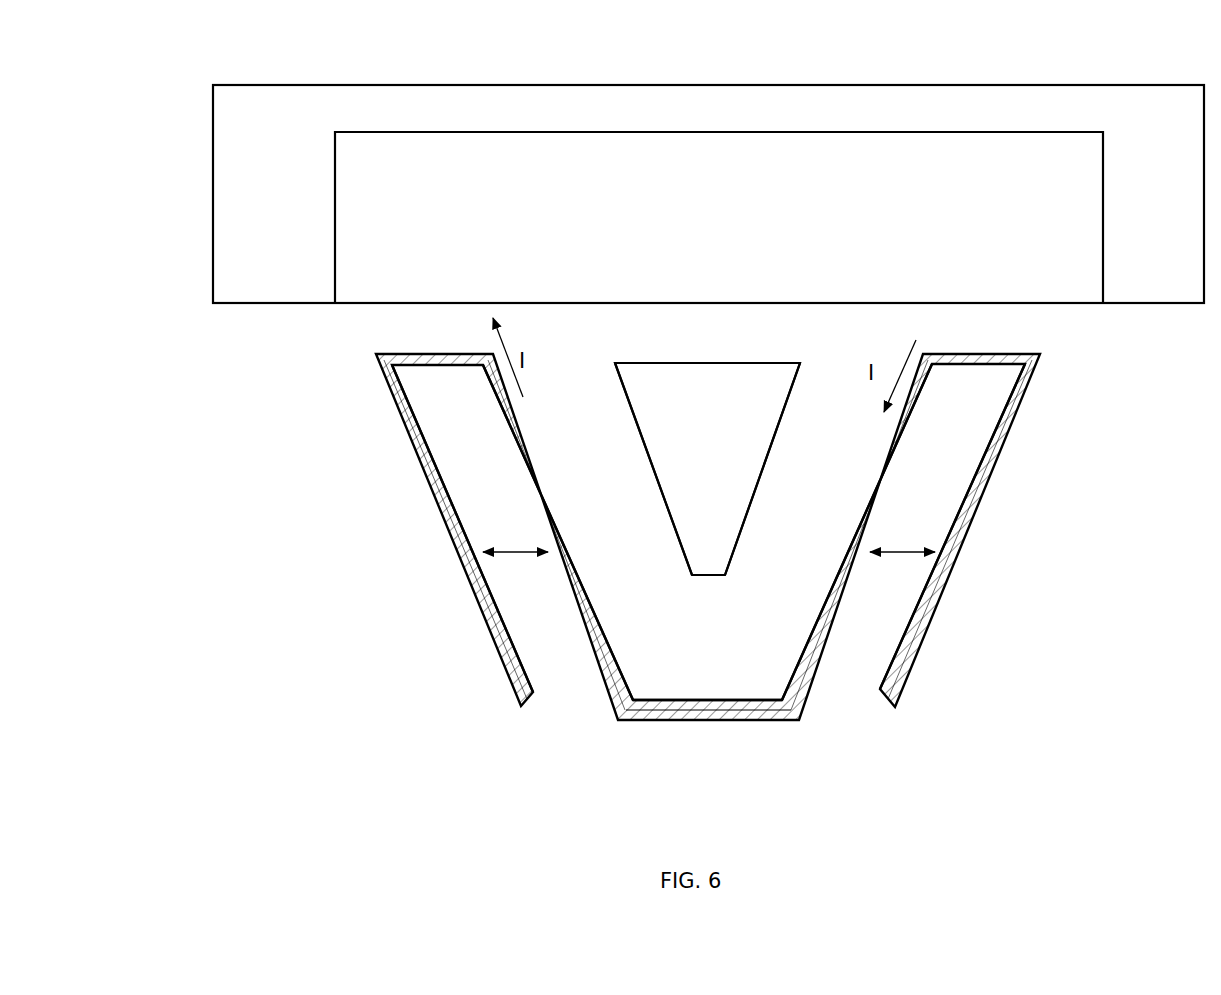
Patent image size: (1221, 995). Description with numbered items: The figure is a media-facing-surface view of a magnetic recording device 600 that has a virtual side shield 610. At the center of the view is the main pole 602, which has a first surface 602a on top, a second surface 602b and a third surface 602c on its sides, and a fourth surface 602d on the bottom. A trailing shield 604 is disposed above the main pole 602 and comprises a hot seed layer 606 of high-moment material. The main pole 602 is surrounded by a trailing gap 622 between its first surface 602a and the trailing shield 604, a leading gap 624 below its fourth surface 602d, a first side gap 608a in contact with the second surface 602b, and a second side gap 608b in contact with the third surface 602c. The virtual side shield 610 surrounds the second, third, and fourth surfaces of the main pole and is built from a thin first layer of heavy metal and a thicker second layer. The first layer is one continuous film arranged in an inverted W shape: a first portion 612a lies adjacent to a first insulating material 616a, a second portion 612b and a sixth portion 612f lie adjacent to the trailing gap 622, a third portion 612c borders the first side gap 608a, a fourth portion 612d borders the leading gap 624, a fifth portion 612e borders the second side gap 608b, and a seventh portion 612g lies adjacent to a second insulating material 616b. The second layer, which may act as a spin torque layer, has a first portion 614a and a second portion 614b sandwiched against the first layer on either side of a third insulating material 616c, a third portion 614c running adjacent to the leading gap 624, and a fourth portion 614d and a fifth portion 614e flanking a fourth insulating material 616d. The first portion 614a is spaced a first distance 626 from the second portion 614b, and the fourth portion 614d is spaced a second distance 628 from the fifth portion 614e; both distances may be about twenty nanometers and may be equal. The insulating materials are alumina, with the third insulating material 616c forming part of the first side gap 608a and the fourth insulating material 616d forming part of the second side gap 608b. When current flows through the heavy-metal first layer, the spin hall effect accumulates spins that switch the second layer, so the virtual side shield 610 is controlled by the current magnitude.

The magnetic recording device 600 is at (206, 60).
The main pole 602 is at (730, 486).
The first surface 602a is at (712, 365).
The second surface 602b is at (646, 455).
The third surface 602c is at (768, 455).
The fourth surface 602d is at (708, 578).
The trailing shield 604 is at (268, 276).
The hot seed layer 606 is at (416, 276).
The first side gap 608a is at (655, 583).
The second side gap 608b is at (820, 583).
The virtual side shield 610 is at (388, 428).
The first portion of the first layer 612a is at (441, 515).
The second portion of the first layer 612b is at (445, 353).
The third portion of the first layer 612c is at (522, 433).
The fourth portion of the first layer 612d is at (672, 699).
The fifth portion of the first layer 612e is at (892, 445).
The sixth portion of the first layer 612f is at (972, 352).
The seventh portion of the first layer 612g is at (992, 473).
The first portion of the second layer 614a is at (418, 399).
The second portion of the second layer 614b is at (525, 466).
The third portion of the second layer 614c is at (712, 722).
The fourth portion of the second layer 614d is at (888, 466).
The fifth portion of the second layer 614e is at (1006, 404).
The first insulating material 616a is at (390, 648).
The second insulating material 616b is at (1062, 648).
The third insulating material 616c is at (592, 676).
The fourth insulating material 616d is at (877, 676).
The trailing gap 622 is at (735, 343).
The leading gap 624 is at (758, 671).
The first distance 626 is at (525, 558).
The second distance 628 is at (868, 558).